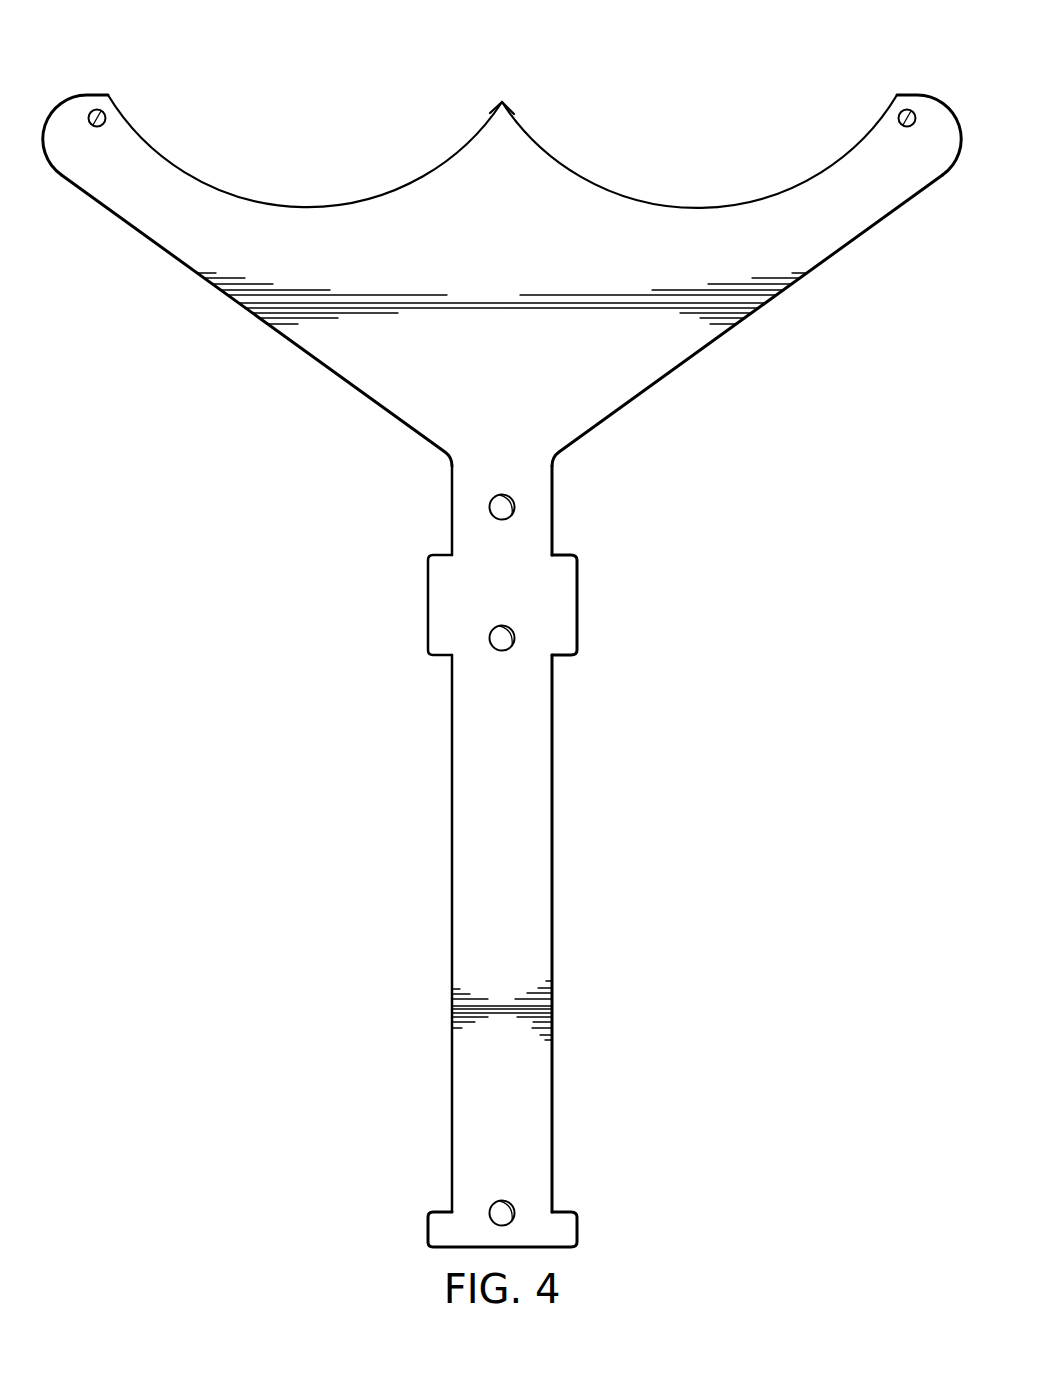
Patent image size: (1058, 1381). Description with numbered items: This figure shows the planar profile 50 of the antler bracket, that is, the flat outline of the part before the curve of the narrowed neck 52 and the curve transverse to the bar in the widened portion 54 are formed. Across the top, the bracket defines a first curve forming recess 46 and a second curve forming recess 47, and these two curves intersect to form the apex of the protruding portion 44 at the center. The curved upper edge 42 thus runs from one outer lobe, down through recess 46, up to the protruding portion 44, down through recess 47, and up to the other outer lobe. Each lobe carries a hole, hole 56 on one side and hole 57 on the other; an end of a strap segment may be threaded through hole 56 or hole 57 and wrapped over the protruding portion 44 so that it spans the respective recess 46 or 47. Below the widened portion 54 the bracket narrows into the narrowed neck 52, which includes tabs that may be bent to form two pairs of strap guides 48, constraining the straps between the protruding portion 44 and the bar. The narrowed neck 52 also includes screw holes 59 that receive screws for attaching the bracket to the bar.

The planar profile 50 is at (356, 64).
The curved upper edge 42 is at (578, 166).
The protruding portion 44 is at (500, 100).
The recess 46 is at (290, 205).
The recess 47 is at (738, 205).
The strap guides 48 is at (428, 606).
The narrowed neck 52 is at (460, 935).
The widened portion 54 is at (356, 378).
The hole 56 is at (95, 108).
The hole 57 is at (907, 108).
The screw holes 59 is at (502, 494).